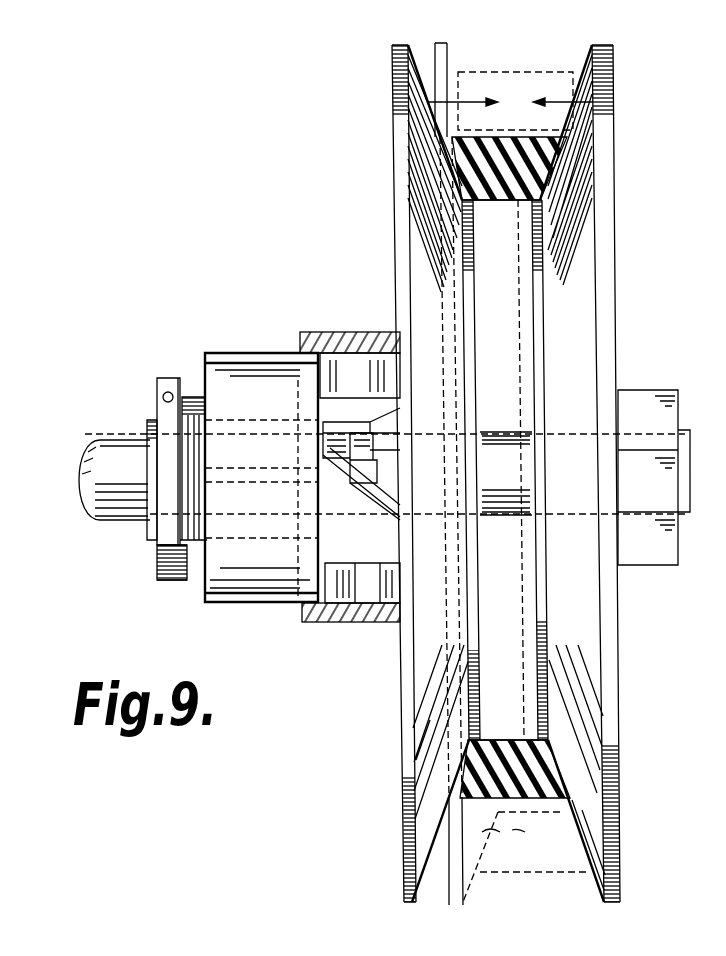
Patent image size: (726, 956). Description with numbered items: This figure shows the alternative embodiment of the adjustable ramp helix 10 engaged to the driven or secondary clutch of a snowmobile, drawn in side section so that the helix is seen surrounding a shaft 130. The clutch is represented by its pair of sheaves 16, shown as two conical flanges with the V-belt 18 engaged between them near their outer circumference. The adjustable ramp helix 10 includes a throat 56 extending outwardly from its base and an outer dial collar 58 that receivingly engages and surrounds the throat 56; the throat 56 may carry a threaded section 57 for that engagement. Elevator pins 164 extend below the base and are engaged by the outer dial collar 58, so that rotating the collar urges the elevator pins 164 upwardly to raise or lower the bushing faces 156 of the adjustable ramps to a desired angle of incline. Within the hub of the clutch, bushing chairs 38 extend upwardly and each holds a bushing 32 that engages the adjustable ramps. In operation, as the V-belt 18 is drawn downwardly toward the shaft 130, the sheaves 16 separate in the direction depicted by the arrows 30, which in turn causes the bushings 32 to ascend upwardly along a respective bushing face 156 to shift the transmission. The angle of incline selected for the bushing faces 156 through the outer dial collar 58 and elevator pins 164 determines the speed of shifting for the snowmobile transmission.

The adjustable ramp helix 10 is at (248, 405).
The sheaves 16 is at (393, 163).
The V-belt 18 is at (578, 66).
The arrows 30 is at (340, 82).
The bushings 32 is at (330, 465).
The bushing chairs 38 is at (400, 430).
The throat 56 is at (172, 562).
The threaded section 57 is at (197, 545).
The outer dial collar 58 is at (165, 378).
The shaft 130 is at (120, 460).
The bushing face 156 is at (322, 425).
The elevator pins 164 is at (197, 396).